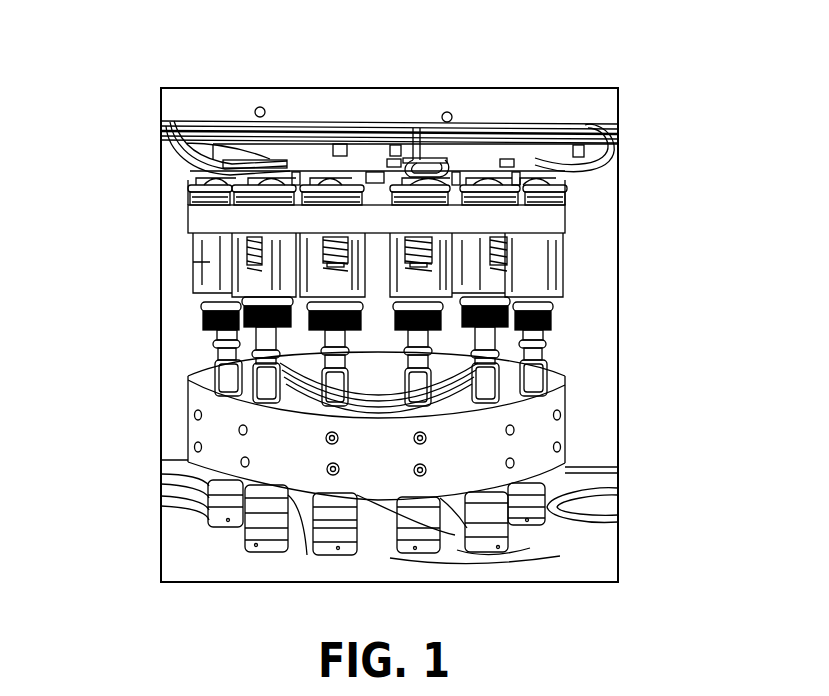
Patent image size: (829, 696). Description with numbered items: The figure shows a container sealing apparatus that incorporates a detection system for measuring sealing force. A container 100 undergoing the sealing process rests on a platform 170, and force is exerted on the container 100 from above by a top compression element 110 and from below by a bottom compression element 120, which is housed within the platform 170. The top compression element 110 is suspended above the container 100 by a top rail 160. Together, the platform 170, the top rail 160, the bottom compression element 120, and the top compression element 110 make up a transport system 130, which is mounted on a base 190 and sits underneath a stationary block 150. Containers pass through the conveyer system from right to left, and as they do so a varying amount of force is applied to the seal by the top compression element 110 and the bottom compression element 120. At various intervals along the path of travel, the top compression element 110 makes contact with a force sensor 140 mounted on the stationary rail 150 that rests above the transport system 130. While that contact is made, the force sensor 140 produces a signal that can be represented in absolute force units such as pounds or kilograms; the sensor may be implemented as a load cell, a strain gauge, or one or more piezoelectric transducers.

The container 100 is at (390, 393).
The top compression element 110 is at (433, 283).
The bottom compression element 120 is at (423, 508).
The transport system 130 is at (168, 293).
The force sensor 140 is at (172, 130).
The stationary block 150 is at (218, 100).
The top rail 160 is at (437, 223).
The platform 170 is at (433, 455).
The base 190 is at (452, 535).